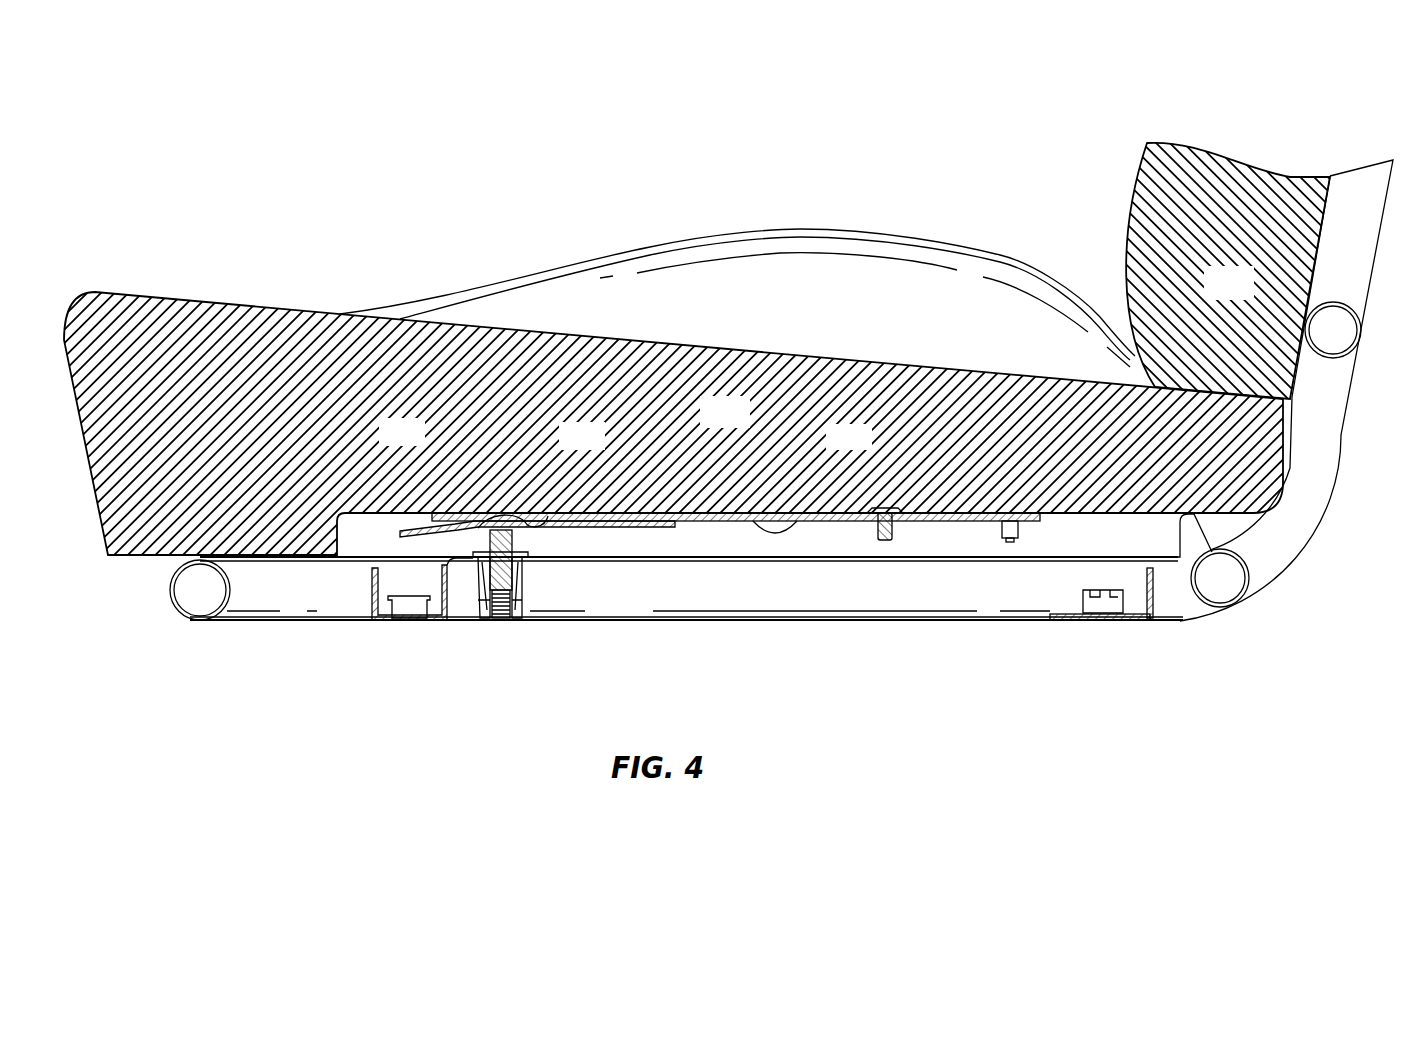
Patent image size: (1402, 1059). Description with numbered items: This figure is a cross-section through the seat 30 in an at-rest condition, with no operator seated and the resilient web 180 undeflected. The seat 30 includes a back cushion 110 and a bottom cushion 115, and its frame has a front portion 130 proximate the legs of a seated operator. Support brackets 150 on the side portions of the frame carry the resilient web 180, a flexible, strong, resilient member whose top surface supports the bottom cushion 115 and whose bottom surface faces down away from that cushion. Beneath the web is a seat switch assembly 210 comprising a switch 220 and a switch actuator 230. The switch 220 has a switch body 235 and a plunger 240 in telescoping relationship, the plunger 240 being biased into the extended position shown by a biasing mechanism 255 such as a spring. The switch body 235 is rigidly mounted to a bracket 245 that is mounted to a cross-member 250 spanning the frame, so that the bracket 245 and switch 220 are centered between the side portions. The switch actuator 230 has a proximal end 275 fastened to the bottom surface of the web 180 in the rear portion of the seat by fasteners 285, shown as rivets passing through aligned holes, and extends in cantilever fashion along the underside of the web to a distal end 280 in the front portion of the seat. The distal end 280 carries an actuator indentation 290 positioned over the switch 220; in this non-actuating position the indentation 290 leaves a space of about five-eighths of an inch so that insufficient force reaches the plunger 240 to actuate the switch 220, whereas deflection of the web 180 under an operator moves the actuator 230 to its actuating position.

The seat 30 is at (813, 292).
The back cushion 110 is at (1246, 295).
The bottom cushion 115 is at (742, 424).
The front portion 130 is at (172, 597).
The support bracket 150 is at (818, 588).
The resilient web 180 is at (1073, 520).
The seat switch assembly 210 is at (722, 536).
The switch 220 is at (545, 590).
The switch actuator 230 is at (798, 513).
The switch body 235 is at (481, 608).
The plunger 240 is at (510, 527).
The bracket 245 is at (448, 598).
The cross-member 250 is at (368, 590).
The biasing mechanism 255 is at (525, 622).
The proximal end 275 is at (945, 520).
The distal end 280 is at (403, 536).
The fastener 285 is at (886, 544).
The actuator indentation 290 is at (518, 521).